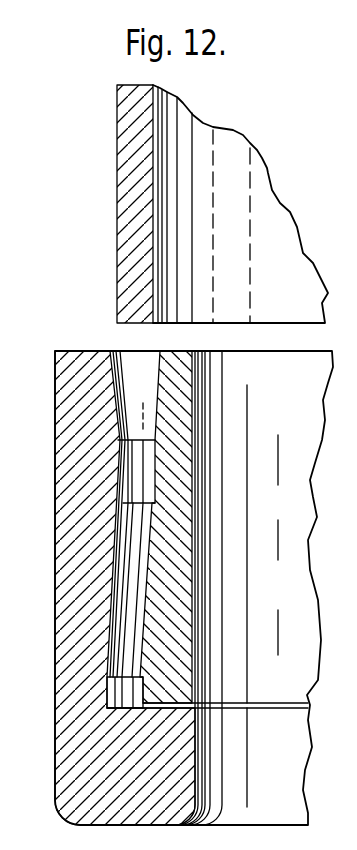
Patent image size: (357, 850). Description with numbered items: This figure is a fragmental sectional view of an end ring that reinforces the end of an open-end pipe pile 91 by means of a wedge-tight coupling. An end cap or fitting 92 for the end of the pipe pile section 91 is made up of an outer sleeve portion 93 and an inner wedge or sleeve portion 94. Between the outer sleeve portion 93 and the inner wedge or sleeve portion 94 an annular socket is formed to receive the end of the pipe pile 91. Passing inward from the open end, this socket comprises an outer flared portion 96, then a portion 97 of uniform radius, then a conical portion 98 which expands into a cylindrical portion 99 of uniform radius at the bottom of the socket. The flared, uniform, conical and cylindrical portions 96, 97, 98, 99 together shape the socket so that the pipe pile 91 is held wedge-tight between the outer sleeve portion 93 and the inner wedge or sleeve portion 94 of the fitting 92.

The open-end pipe pile 91 is at (133, 211).
The end cap or fitting 92 is at (55, 394).
The outer sleeve portion 93 is at (92, 431).
The inner wedge or sleeve portion 94 is at (178, 388).
The outer flared portion 96 is at (113, 378).
The portion of uniform radius 97 is at (127, 473).
The conical portion 98 is at (122, 565).
The cylindrical portion 99 is at (110, 688).